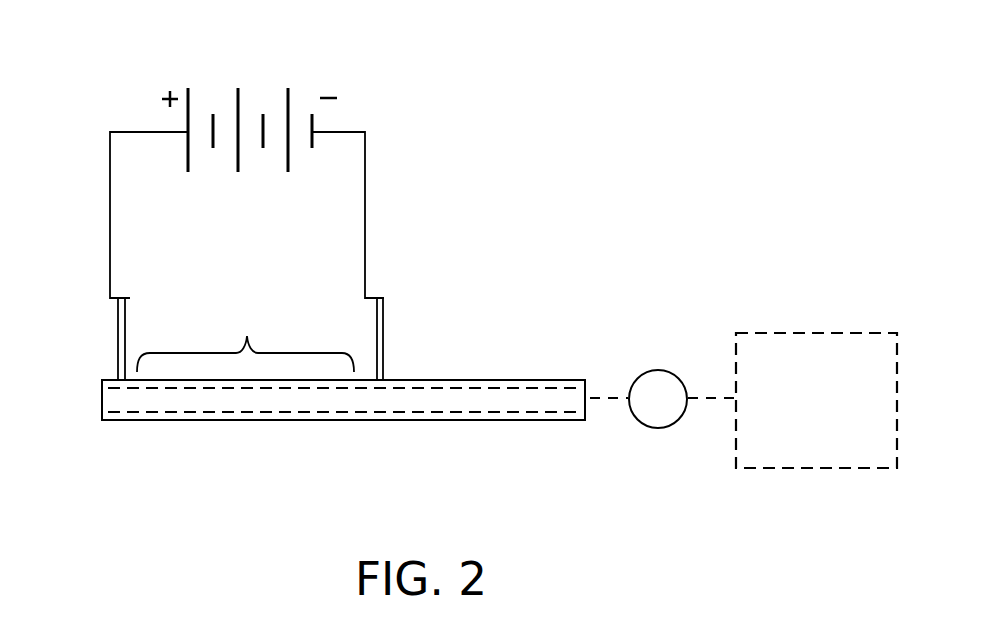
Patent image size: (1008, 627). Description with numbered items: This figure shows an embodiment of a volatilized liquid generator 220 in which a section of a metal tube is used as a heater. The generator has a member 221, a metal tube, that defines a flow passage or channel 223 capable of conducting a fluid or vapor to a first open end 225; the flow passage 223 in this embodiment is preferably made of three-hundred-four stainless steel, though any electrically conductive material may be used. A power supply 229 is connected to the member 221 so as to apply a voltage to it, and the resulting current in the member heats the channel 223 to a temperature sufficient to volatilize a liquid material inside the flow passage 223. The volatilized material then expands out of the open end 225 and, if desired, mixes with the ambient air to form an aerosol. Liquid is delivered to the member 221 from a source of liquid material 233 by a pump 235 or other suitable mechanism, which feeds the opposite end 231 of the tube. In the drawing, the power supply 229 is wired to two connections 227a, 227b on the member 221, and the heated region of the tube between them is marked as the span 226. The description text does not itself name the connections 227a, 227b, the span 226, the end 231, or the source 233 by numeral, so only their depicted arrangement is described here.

The volatilized liquid generator 220 is at (522, 231).
The member 221 is at (373, 424).
The flow passage 223 is at (258, 400).
The first open end 225 is at (100, 396).
The electrode gap / reaction region 226 is at (245, 338).
The first electrode 227a is at (116, 355).
The second electrode 227b is at (385, 333).
The power supply 229 is at (327, 87).
The tube outlet end 231 is at (565, 421).
The source of liquid material 233 is at (808, 469).
The pump 235 is at (658, 428).